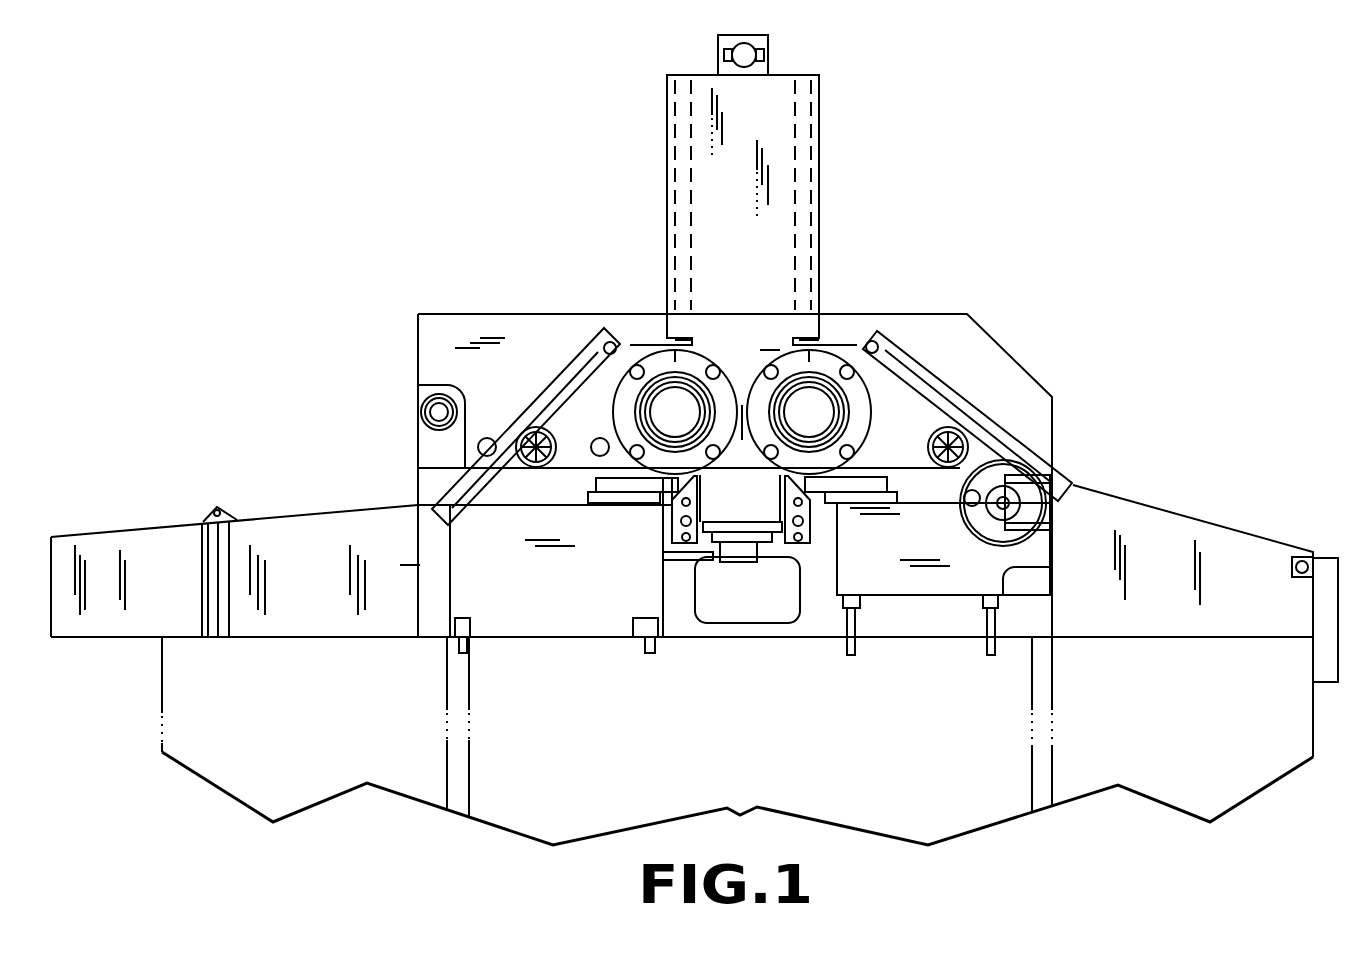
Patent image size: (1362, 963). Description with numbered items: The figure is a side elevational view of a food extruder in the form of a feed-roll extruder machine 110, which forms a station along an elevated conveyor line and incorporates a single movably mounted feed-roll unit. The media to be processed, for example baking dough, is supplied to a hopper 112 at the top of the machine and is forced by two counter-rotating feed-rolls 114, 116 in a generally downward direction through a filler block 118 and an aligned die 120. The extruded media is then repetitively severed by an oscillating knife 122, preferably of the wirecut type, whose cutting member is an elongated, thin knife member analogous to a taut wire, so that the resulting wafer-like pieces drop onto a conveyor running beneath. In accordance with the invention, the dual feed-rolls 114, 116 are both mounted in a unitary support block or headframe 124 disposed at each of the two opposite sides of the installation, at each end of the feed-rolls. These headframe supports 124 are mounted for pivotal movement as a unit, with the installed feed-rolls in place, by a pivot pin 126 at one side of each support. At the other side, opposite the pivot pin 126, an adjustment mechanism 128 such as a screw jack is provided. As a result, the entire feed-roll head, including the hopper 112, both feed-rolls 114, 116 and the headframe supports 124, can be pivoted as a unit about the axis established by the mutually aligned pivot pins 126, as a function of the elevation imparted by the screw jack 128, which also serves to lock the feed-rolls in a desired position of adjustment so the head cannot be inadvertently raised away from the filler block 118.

The feed-roll extruder machine 110 is at (1045, 350).
The hopper 112 is at (782, 279).
The feed-roll 114 is at (812, 400).
The feed-roll 116 is at (672, 400).
The filler block 118 is at (752, 405).
The die 120 is at (715, 556).
The oscillating knife 122 is at (745, 585).
The headframe 124 is at (968, 340).
The pivot pin 126 is at (438, 413).
The adjustment mechanism 128 is at (1090, 437).